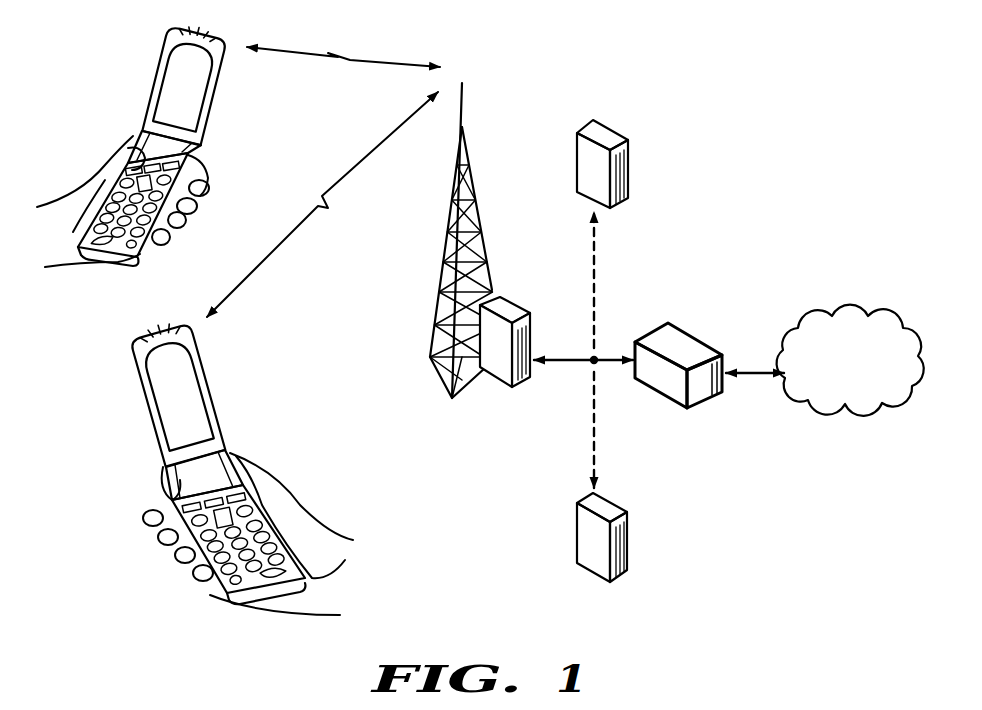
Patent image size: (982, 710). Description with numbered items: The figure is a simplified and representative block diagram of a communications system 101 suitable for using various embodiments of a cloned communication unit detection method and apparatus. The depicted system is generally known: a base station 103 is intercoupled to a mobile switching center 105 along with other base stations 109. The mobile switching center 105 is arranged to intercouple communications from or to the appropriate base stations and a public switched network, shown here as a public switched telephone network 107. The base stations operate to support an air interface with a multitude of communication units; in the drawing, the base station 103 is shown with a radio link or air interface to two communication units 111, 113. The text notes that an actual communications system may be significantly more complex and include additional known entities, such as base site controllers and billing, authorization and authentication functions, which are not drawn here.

The communications system 101 is at (480, 317).
The base station 103 is at (514, 306).
The mobile switching center 105 is at (701, 336).
The public switched telephone network 107 is at (852, 408).
The other base stations 109 is at (576, 157).
The communication unit 111 is at (210, 118).
The communication unit 113 is at (142, 416).